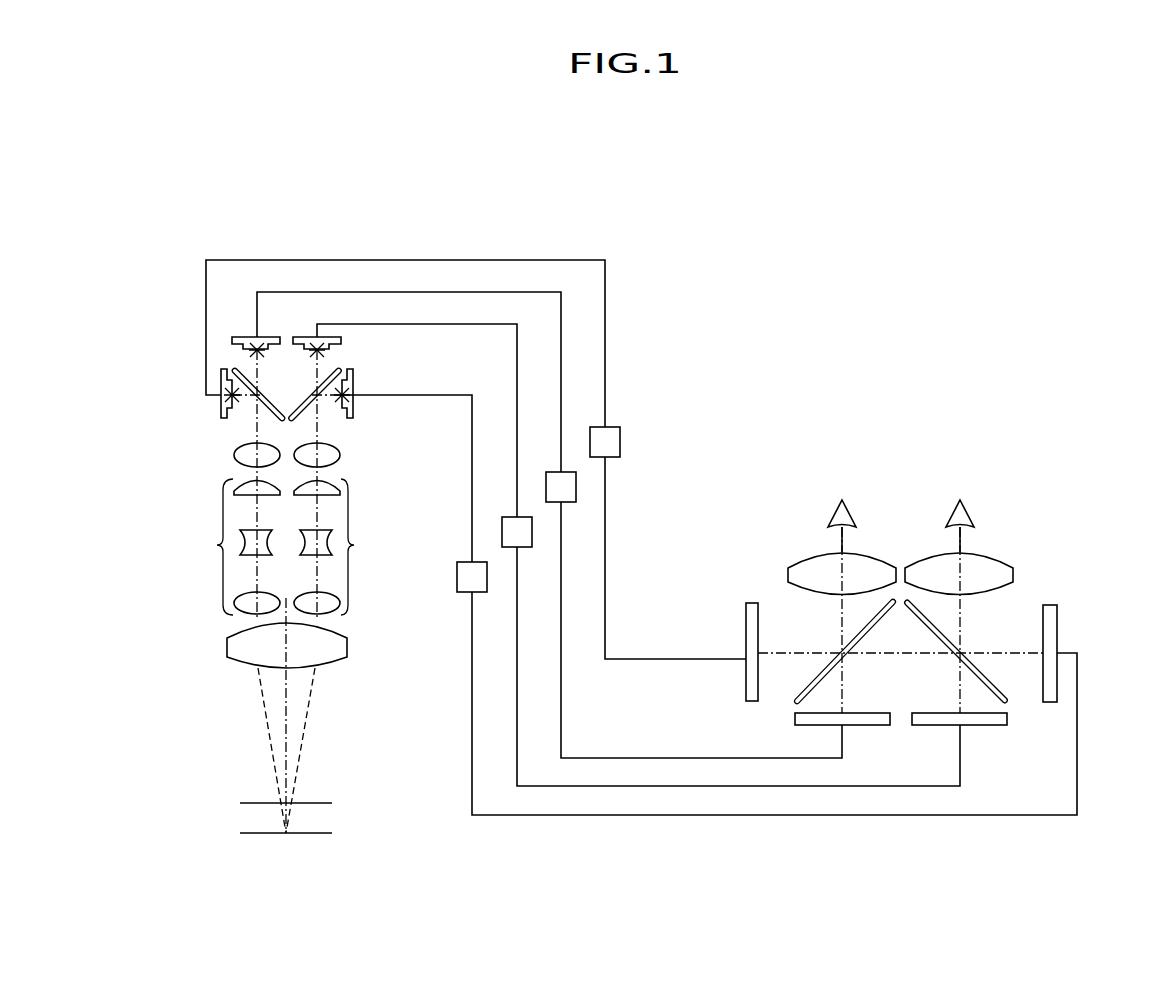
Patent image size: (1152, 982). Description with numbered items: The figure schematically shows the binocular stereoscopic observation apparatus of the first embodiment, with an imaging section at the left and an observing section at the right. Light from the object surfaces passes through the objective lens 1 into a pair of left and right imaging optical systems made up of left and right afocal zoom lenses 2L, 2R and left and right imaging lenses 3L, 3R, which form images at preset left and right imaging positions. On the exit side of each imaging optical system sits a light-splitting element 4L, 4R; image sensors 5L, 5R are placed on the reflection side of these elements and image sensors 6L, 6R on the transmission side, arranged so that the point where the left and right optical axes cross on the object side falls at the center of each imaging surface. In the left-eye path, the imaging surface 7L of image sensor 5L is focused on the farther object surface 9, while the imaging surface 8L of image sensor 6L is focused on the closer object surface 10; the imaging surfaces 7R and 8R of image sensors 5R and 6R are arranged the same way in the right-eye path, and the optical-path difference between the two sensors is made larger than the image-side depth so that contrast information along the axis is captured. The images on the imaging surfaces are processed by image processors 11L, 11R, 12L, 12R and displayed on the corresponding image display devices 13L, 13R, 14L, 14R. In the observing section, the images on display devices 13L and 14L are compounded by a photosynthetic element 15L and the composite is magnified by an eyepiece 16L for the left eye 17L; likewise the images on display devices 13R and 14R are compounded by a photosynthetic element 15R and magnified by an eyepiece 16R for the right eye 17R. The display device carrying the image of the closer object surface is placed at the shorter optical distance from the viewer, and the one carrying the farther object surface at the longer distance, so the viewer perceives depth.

The objective lens 1 is at (227, 645).
The left afocal zoom lens 2L is at (217, 545).
The right afocal zoom lens 2R is at (355, 545).
The left imaging lens 3L is at (233, 455).
The right imaging lens 3R is at (341, 455).
The left light-splitting element 4L is at (235, 369).
The right light-splitting element 4R is at (340, 369).
The left image sensor (reflection side) 5L is at (230, 400).
The right image sensor (reflection side) 5R is at (345, 402).
The left image sensor (transmission side) 6L is at (232, 340).
The right image sensor (transmission side) 6R is at (320, 338).
The imaging surface of image sensor 5L 7L is at (221, 380).
The imaging surface of image sensor 5R 7R is at (353, 384).
The imaging surface of image sensor 6L 8L is at (255, 348).
The imaging surface of image sensor 6R 8R is at (318, 348).
The object surface 9 is at (248, 832).
The object surface 10 is at (248, 803).
The image processor 11L is at (620, 440).
The image processor 11R is at (457, 577).
The image processor 12L is at (577, 490).
The image processor 12R is at (502, 532).
The image display device 13L is at (750, 603).
The image display device 13R is at (1057, 630).
The image display device 14L is at (865, 725).
The image display device 14R is at (978, 725).
The photosynthetic element 15L is at (795, 703).
The photosynthetic element 15R is at (1007, 703).
The eyepiece 16L is at (788, 575).
The right eyepiece 16R is at (1013, 575).
The left eye 17L is at (835, 520).
The right eye 17R is at (972, 520).